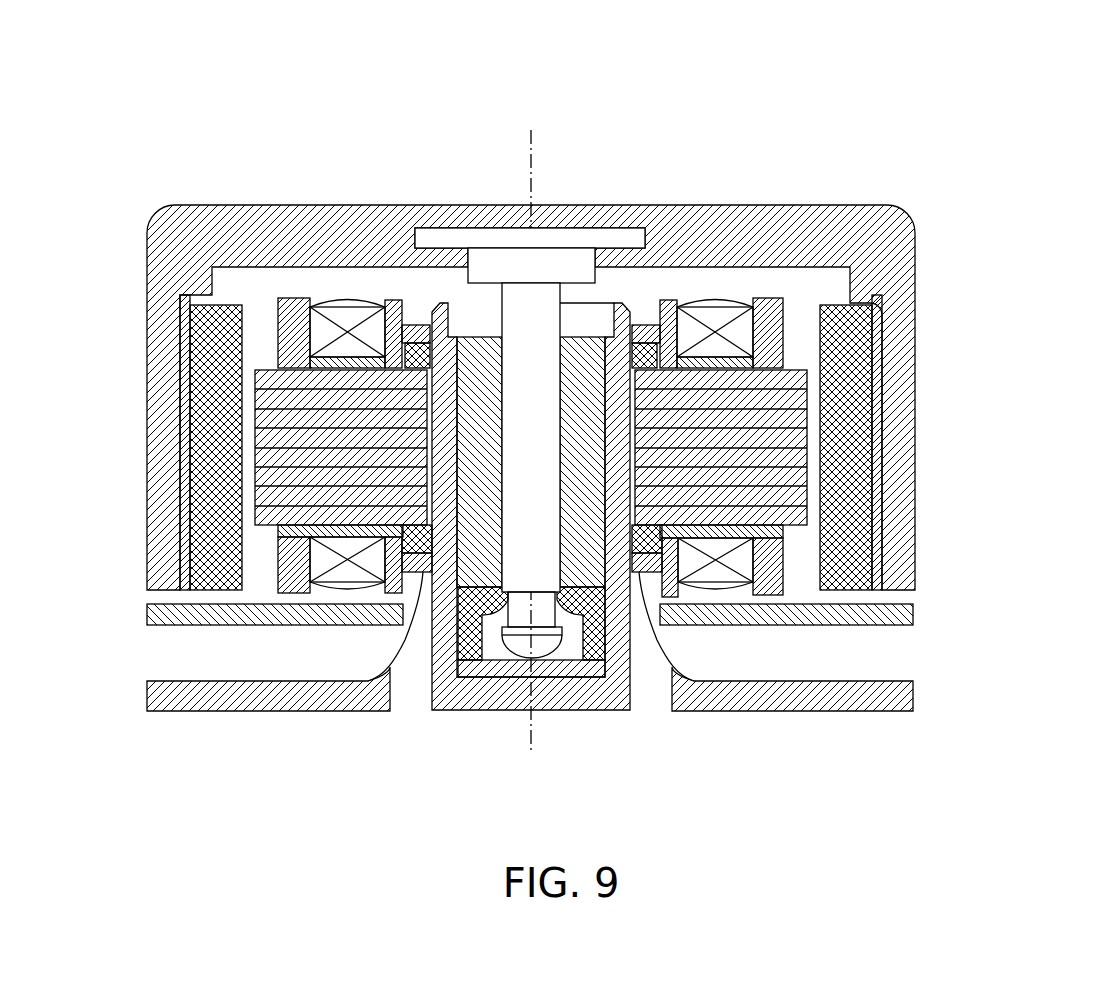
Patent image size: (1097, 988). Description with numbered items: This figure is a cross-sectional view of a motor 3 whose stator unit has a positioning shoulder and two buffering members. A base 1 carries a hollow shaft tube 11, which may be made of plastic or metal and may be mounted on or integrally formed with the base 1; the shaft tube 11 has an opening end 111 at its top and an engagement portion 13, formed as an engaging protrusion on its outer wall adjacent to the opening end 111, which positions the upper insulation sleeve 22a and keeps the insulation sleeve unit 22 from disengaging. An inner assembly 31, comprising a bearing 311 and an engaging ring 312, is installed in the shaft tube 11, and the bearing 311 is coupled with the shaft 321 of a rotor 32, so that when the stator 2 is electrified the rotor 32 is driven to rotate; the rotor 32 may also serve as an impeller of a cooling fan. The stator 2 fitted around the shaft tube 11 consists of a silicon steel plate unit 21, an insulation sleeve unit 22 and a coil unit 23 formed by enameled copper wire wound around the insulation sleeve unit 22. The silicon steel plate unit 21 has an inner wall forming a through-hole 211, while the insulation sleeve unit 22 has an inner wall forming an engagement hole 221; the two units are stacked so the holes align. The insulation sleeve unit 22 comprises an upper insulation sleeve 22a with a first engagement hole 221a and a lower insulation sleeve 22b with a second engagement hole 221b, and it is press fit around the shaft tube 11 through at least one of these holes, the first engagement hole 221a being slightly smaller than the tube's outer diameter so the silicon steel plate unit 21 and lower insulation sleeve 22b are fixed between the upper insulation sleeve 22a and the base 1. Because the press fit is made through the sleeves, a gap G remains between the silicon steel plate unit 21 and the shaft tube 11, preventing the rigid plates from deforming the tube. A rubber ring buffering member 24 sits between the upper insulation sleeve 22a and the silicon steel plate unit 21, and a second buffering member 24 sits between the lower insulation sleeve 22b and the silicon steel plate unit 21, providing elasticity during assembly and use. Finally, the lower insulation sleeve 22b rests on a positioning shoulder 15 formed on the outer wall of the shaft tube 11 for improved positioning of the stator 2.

The base 1 is at (840, 706).
The shaft tube 11 is at (668, 640).
The engagement portion 13 is at (638, 330).
The positioning shoulder 15 is at (668, 575).
The stator 2 is at (766, 253).
The silicon steel plate unit 21 is at (268, 375).
The through-hole 211 is at (418, 450).
The insulation sleeve unit 22 is at (1028, 405).
The upper insulation sleeve 22a is at (780, 342).
The lower insulation sleeve 22b is at (785, 562).
The coil unit 23 is at (738, 578).
The buffering member 24 is at (650, 370).
The motor 3 is at (868, 183).
The inner assembly 31 is at (362, 815).
The bearing 311 is at (467, 553).
The engaging ring 312 is at (475, 670).
The rotor 32 is at (723, 207).
The shaft 321 is at (545, 575).
The opening end 111 is at (463, 316).
The engagement hole 221 is at (557, 92).
The first engagement hole 221a is at (628, 330).
The second engagement hole 221b is at (632, 558).
The gap G is at (427, 398).